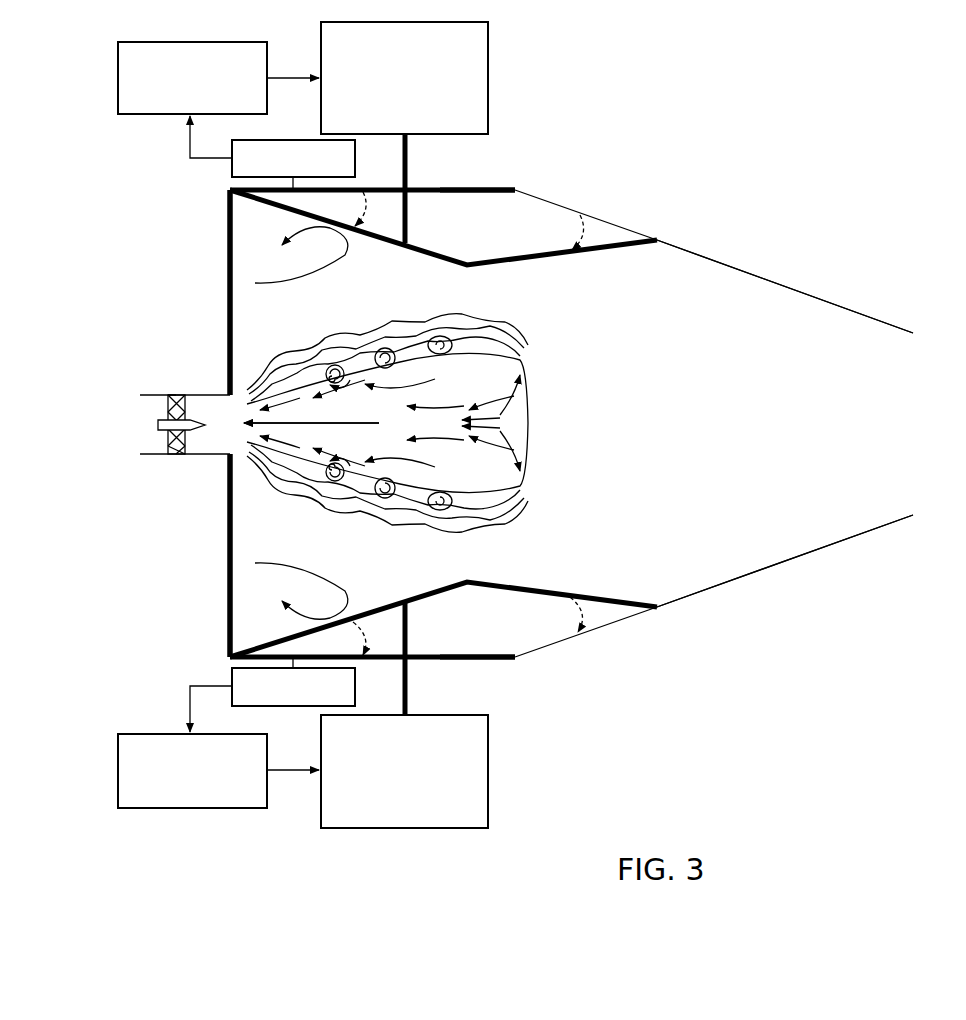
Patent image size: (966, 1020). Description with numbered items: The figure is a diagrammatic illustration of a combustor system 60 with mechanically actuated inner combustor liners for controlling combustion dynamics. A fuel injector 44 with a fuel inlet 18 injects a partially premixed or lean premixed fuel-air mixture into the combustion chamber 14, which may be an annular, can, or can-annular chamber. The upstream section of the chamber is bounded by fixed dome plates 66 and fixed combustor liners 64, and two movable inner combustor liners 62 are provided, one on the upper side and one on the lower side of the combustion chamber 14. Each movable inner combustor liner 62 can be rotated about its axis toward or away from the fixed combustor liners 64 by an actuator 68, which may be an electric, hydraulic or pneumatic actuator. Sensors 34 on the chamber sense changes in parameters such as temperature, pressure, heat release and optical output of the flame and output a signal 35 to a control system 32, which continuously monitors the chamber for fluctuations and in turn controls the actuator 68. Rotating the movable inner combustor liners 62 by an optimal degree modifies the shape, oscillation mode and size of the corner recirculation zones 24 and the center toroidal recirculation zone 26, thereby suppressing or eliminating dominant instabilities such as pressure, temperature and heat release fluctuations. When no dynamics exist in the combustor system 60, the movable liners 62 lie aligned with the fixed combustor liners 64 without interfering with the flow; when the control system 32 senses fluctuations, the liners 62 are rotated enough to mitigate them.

The combustion chamber 14 is at (725, 517).
The fuel inlet 18 is at (150, 423).
The corner recirculation zones 24 is at (295, 423).
The center toroidal recirculation zone 26 is at (386, 423).
The control system 32 is at (118, 78).
The sensors 34 is at (232, 168).
The signal 35 is at (190, 148).
The fuel injector 44 is at (125, 376).
The combustor system 60 is at (878, 88).
The movable inner combustor liners 62 is at (445, 250).
The fixed combustor liners 64 is at (472, 190).
The fixed dome plates 66 is at (230, 268).
The actuator 68 is at (488, 75).